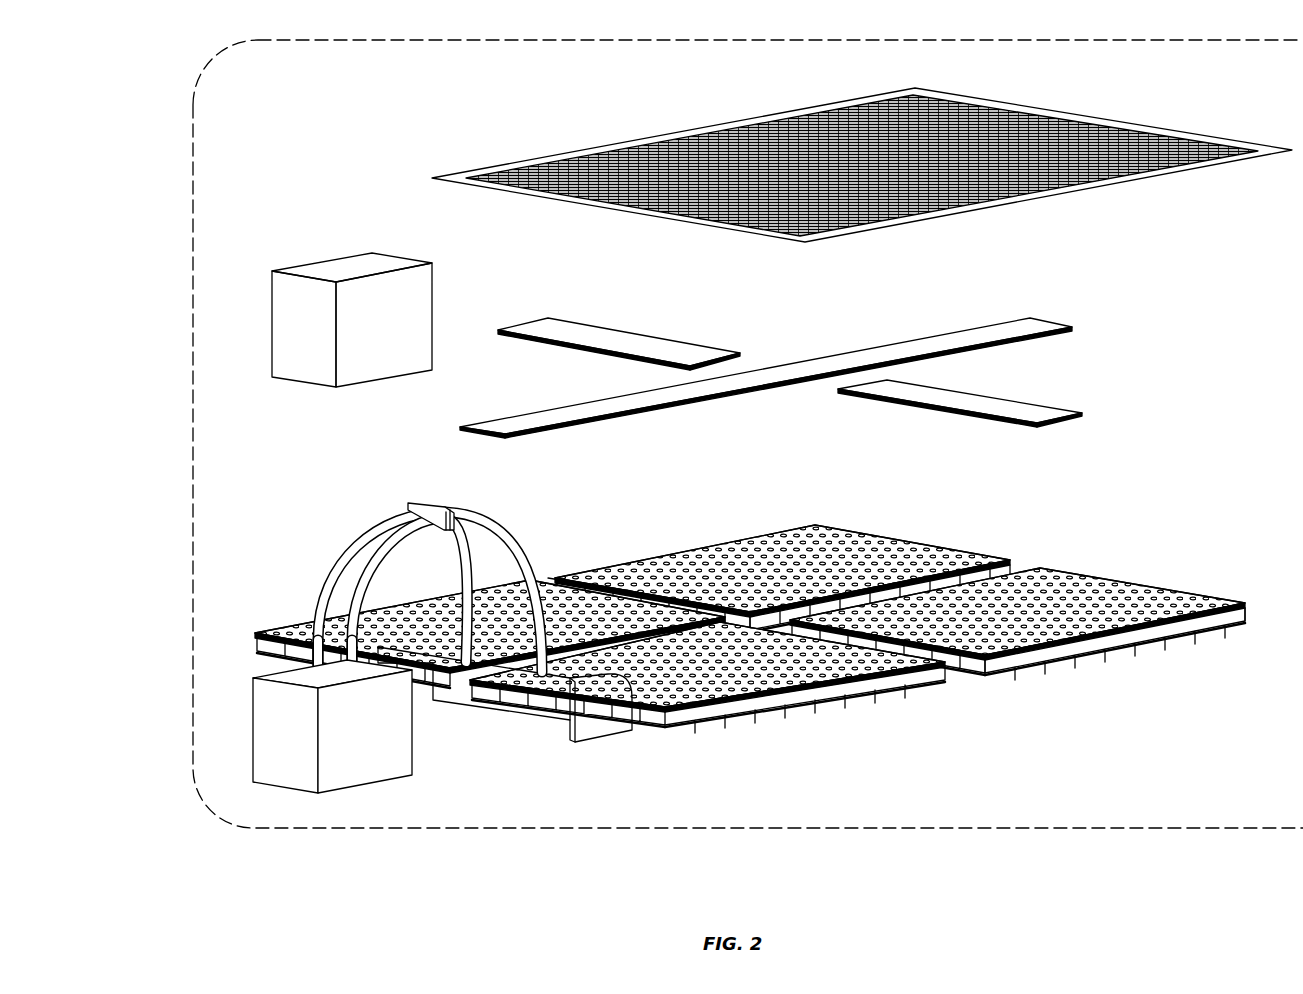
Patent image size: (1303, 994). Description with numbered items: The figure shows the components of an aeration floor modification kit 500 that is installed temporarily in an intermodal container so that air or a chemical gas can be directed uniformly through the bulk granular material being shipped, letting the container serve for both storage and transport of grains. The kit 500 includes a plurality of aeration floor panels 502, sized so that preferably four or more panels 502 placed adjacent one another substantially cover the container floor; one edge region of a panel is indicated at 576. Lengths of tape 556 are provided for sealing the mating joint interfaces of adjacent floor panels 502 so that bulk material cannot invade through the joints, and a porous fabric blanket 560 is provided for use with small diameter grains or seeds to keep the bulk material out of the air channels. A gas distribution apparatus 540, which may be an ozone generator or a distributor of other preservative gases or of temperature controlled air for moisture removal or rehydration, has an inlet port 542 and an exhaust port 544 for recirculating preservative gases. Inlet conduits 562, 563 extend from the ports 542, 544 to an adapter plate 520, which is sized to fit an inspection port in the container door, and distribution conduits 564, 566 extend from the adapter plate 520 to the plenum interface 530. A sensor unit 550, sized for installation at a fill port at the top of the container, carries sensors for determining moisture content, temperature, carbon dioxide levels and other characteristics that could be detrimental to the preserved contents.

The aeration floor modification kit 500 is at (212, 812).
The aeration floor panels 502 is at (750, 634).
The adapter plate 520 is at (438, 498).
The plenum interface 530 is at (612, 714).
The gas distribution apparatus 540 is at (370, 730).
The inlet port 542 is at (308, 673).
The exhaust port 544 is at (315, 626).
The sensor unit 550 is at (346, 267).
The lengths of tape 556 is at (620, 344).
The porous fabric blanket 560 is at (708, 130).
The inlet conduit 562 is at (358, 581).
The inlet conduit 563 is at (320, 611).
The distribution conduit 564 is at (476, 558).
The distribution conduit 566 is at (498, 513).
The tile edge 576 is at (540, 583).